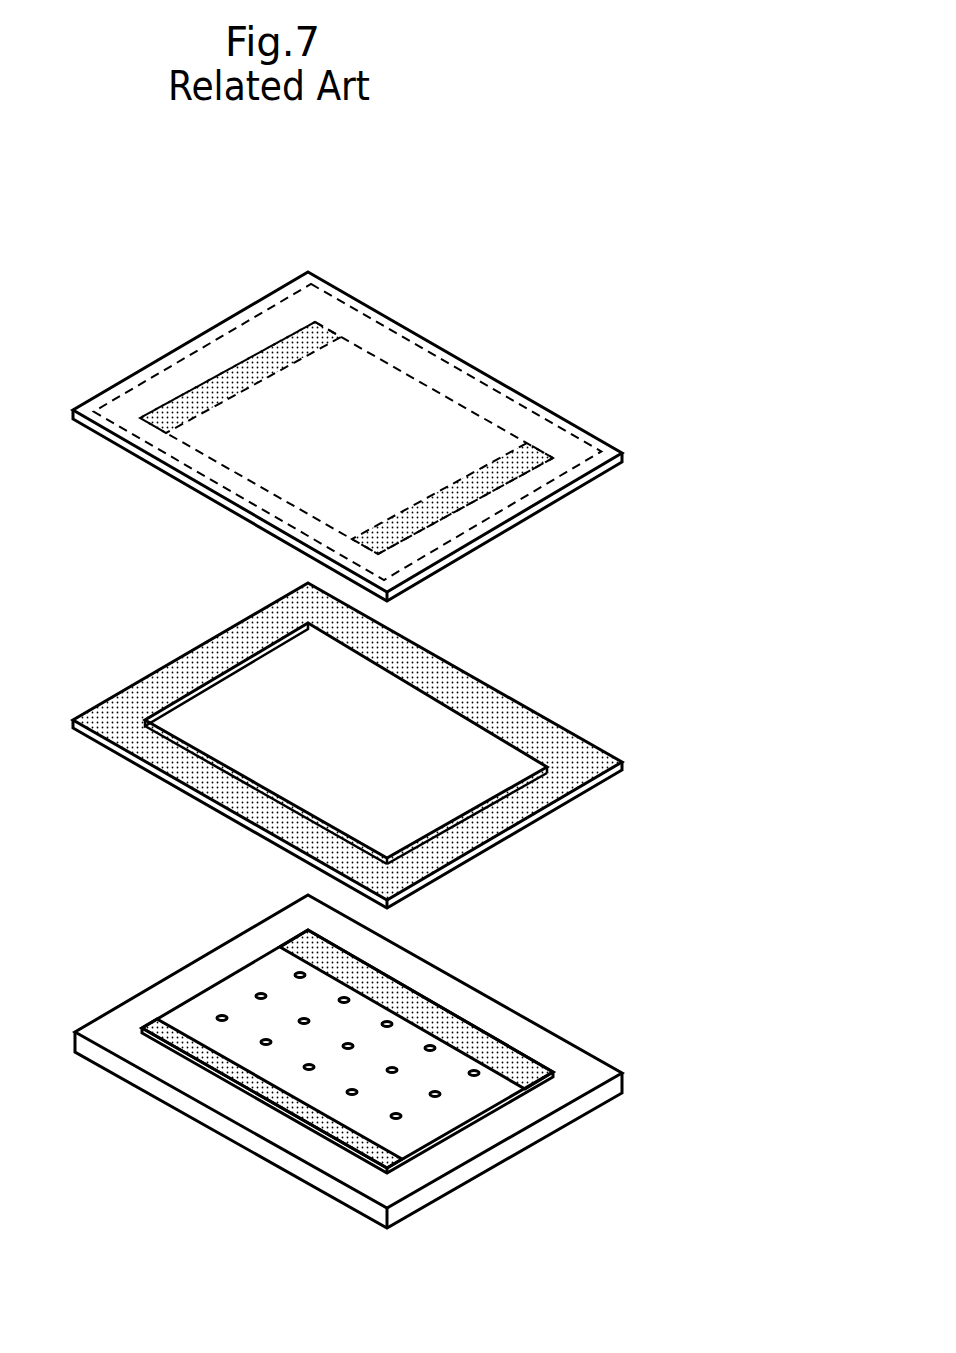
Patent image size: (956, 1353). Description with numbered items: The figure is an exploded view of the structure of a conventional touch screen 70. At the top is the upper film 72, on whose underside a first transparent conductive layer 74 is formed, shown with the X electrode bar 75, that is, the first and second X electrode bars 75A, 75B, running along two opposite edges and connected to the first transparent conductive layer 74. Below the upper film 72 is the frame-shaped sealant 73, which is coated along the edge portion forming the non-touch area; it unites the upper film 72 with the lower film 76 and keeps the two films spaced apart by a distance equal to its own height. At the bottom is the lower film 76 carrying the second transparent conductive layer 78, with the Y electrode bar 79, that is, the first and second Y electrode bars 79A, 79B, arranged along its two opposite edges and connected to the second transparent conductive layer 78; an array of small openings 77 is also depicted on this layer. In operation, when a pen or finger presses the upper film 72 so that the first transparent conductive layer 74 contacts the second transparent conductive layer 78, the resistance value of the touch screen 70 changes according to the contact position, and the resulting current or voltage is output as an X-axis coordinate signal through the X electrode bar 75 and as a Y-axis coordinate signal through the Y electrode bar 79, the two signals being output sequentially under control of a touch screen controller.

The touch screen 70 is at (707, 576).
The upper film 72 is at (273, 318).
The sealant 73 is at (585, 752).
The first transparent conductive layer 74 is at (346, 414).
The X electrode bar 75 is at (418, 222).
The first X electrode bar 75A is at (320, 323).
The second X electrode bar 75B is at (512, 447).
The lower film 76 is at (113, 1030).
The holes 77 is at (475, 1067).
The second transparent conductive layer 78 is at (230, 992).
The Y electrode bar 79 is at (653, 1203).
The first Y electrode bar 79A is at (547, 1080).
The second Y electrode bar 79B is at (388, 1148).